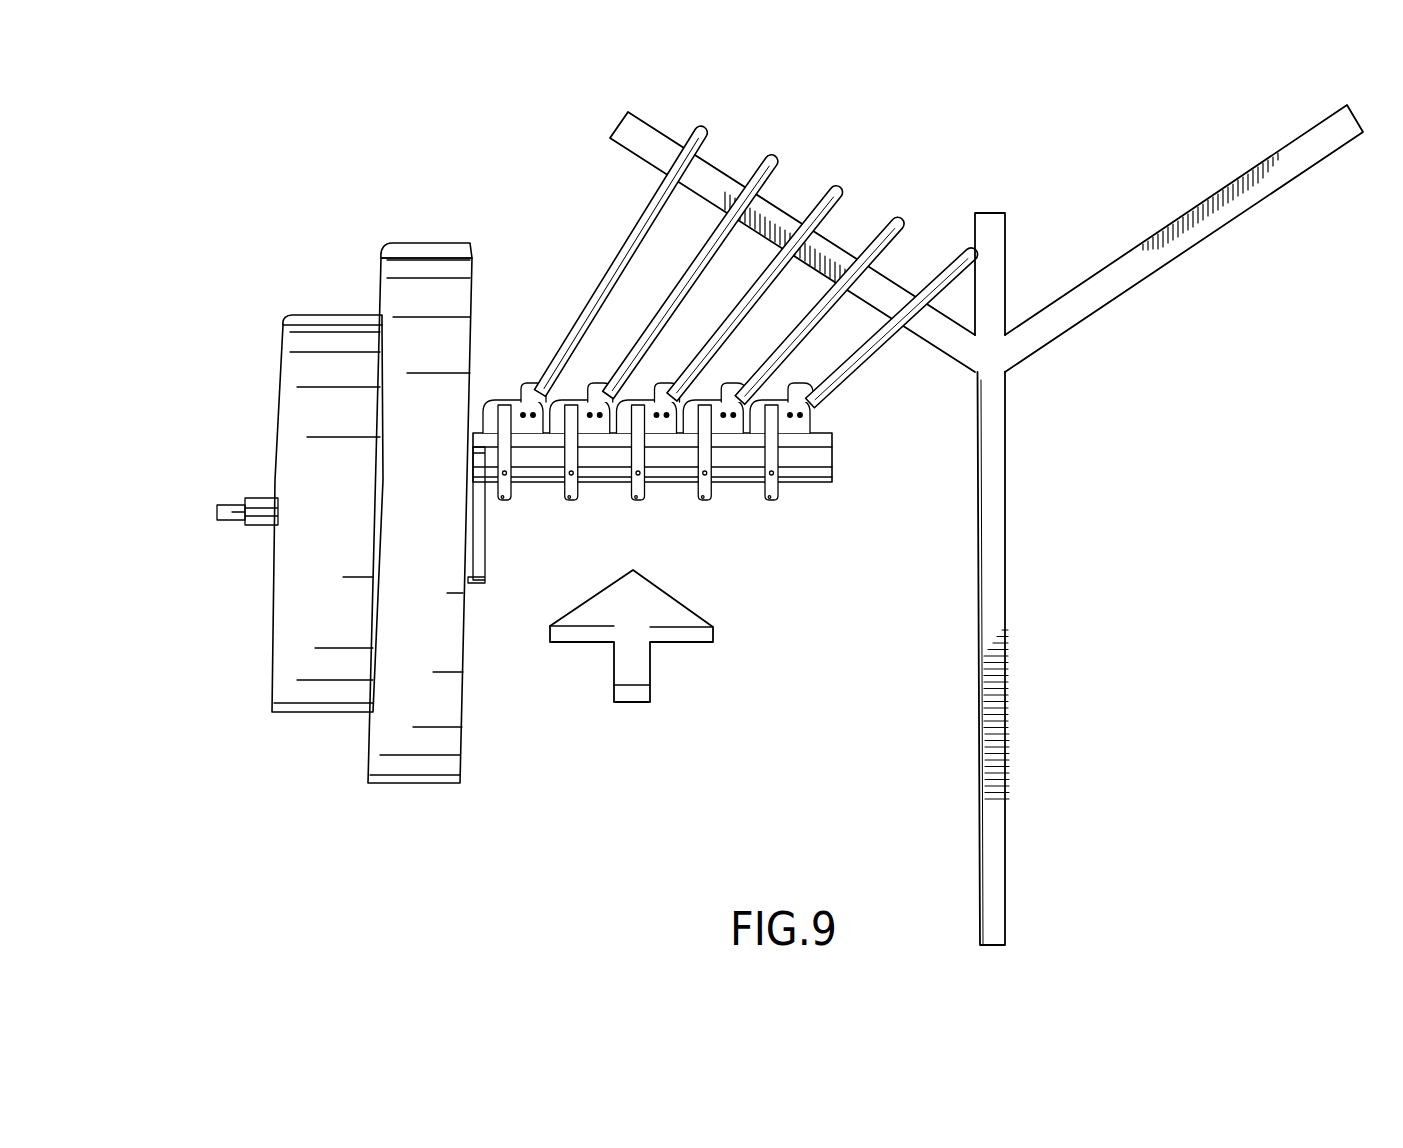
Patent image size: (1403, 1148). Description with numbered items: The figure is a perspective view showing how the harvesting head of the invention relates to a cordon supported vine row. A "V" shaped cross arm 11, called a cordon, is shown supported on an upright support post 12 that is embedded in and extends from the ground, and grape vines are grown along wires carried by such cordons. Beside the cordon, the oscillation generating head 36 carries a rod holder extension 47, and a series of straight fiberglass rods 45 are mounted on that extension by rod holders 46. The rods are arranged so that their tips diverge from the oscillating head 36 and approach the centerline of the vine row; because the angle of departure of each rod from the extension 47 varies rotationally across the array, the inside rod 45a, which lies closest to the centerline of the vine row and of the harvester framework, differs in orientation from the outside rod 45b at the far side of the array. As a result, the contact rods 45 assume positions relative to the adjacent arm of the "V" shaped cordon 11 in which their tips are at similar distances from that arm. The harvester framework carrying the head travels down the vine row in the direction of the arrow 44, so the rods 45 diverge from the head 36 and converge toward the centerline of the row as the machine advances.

The "V" shaped cross arm 11 is at (1090, 315).
The upright support post 12 is at (1011, 820).
The oscillation generating head 36 is at (427, 243).
The arrow 44 is at (650, 670).
The fiberglass rods 45 is at (724, 326).
The inside rod 45a is at (843, 380).
The outside rod 45b is at (622, 252).
The rod holders 46 is at (528, 388).
The rod holder extension 47 is at (800, 482).